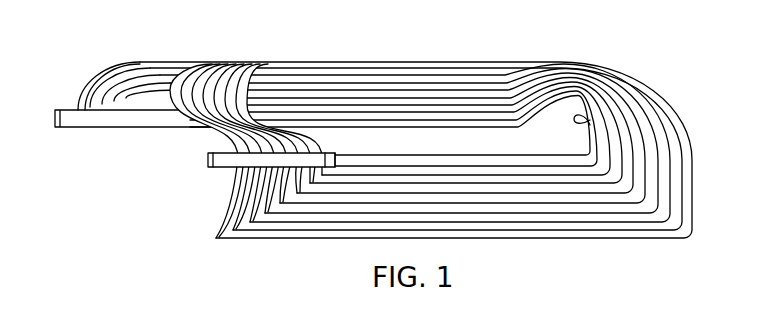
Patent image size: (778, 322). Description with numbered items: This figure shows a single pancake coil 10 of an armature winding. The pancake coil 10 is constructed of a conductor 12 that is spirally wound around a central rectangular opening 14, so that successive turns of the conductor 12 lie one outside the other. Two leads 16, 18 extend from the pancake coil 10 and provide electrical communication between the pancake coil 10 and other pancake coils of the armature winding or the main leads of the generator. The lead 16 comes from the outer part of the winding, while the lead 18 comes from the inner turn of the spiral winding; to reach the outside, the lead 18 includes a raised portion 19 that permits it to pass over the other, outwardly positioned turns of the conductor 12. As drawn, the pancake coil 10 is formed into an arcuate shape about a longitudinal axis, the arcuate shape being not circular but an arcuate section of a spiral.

The pancake coil 10 is at (421, 39).
The conductor 12 is at (670, 234).
The central rectangular opening 14 is at (576, 120).
The lead 16 is at (70, 117).
The lead 18 is at (213, 165).
The raised portion 19 is at (331, 157).